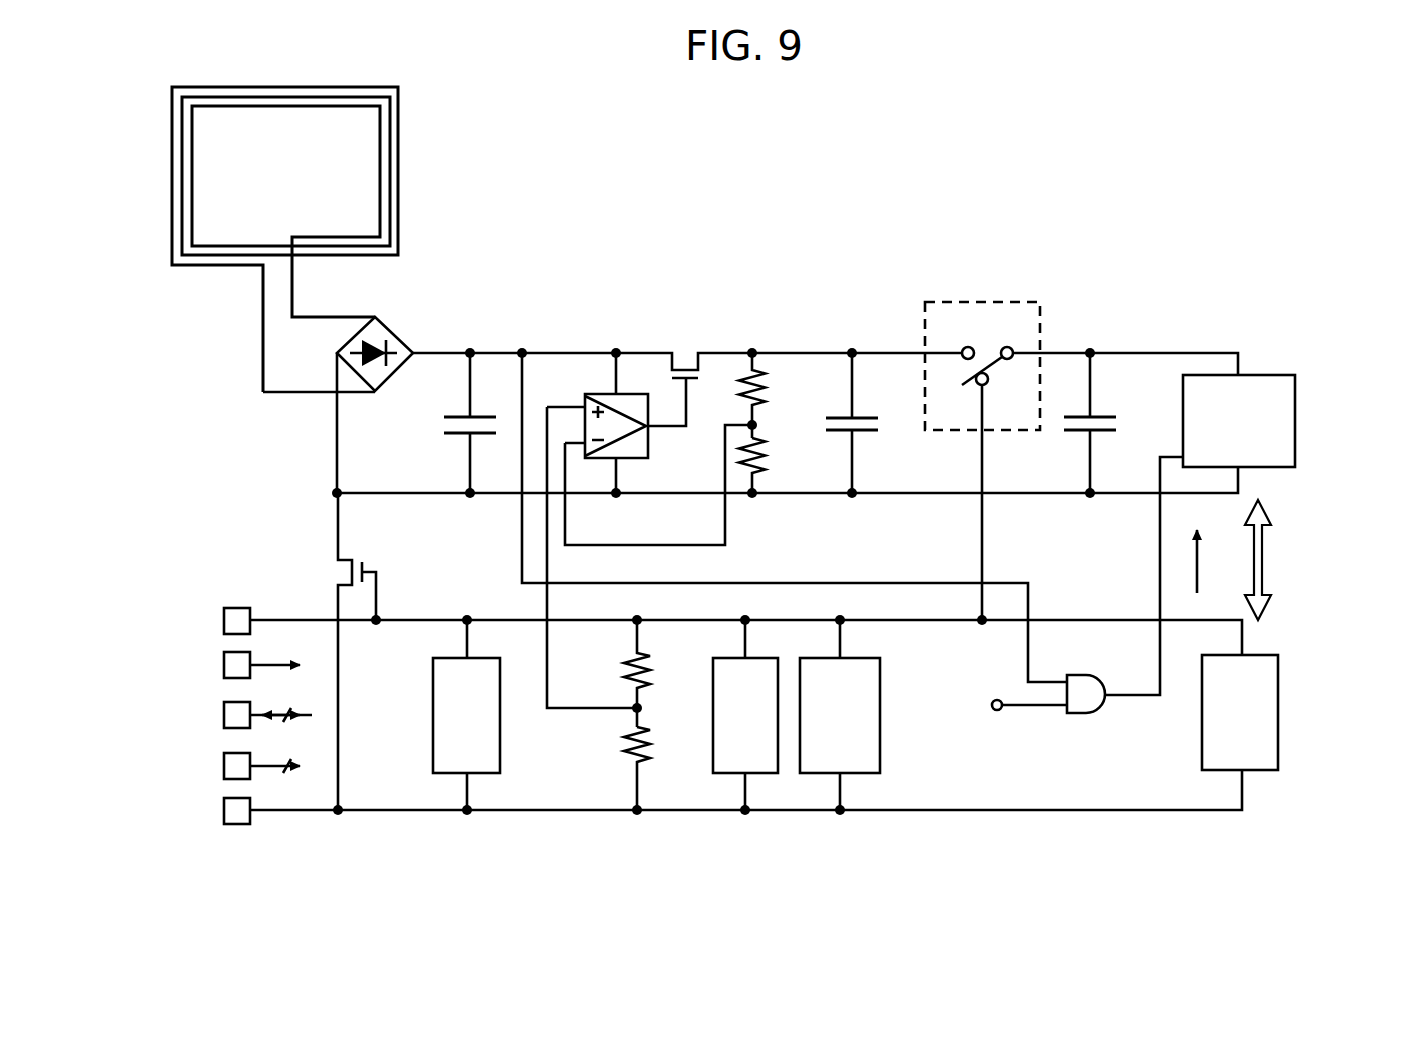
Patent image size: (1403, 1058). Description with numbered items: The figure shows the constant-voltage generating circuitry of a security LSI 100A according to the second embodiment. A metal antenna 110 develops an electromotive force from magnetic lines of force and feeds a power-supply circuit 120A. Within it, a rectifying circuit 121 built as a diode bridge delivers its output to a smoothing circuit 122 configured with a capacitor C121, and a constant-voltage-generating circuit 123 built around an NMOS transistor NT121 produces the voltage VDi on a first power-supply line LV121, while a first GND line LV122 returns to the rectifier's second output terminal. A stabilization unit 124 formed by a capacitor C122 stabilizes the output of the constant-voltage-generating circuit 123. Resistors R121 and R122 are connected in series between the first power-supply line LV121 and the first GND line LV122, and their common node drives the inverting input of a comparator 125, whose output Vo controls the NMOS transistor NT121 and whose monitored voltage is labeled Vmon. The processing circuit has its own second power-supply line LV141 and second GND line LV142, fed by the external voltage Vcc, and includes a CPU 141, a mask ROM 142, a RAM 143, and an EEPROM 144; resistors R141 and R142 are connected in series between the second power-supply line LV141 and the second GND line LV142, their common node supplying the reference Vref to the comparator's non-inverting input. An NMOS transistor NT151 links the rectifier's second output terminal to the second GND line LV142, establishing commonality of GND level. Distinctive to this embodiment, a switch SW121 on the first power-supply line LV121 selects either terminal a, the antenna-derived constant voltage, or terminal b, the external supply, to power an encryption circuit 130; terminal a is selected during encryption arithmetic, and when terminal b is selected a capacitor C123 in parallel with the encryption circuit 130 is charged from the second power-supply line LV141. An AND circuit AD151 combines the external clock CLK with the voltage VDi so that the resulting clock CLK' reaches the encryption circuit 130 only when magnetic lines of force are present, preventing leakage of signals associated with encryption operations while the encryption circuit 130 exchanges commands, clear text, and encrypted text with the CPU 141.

The security LSI 100A is at (692, 140).
The metal antenna 110 is at (400, 162).
The power-supply circuit 120A is at (750, 267).
The rectifying circuit 121 is at (399, 325).
The smoothing circuit 122 is at (430, 380).
The constant-voltage-generating circuit 123 is at (637, 324).
The stabilization unit 124 is at (884, 378).
The comparator 125 is at (597, 392).
The encryption circuit 130 is at (1297, 418).
The CPU 141 is at (1280, 712).
The mask ROM 142 is at (433, 720).
The RAM 143 is at (763, 776).
The non-volatile memory (EEPROM) 144 is at (882, 740).
The capacitor C121 is at (442, 422).
The capacitor C122 is at (880, 427).
The capacitor C123 is at (1130, 400).
The resistor R121 is at (784, 395).
The resistor R122 is at (784, 465).
The resistor R141 is at (667, 673).
The resistor R142 is at (667, 768).
The NMOS transistor NT121 is at (683, 350).
The NMOS transistor NT151 is at (340, 572).
The switch SW121 is at (1041, 316).
The AND circuit AD151 is at (1105, 657).
The first power-supply line LV121 is at (880, 352).
The first GND line LV122 is at (405, 493).
The second power-supply line LV141 is at (396, 626).
The second GND line LV142 is at (390, 807).